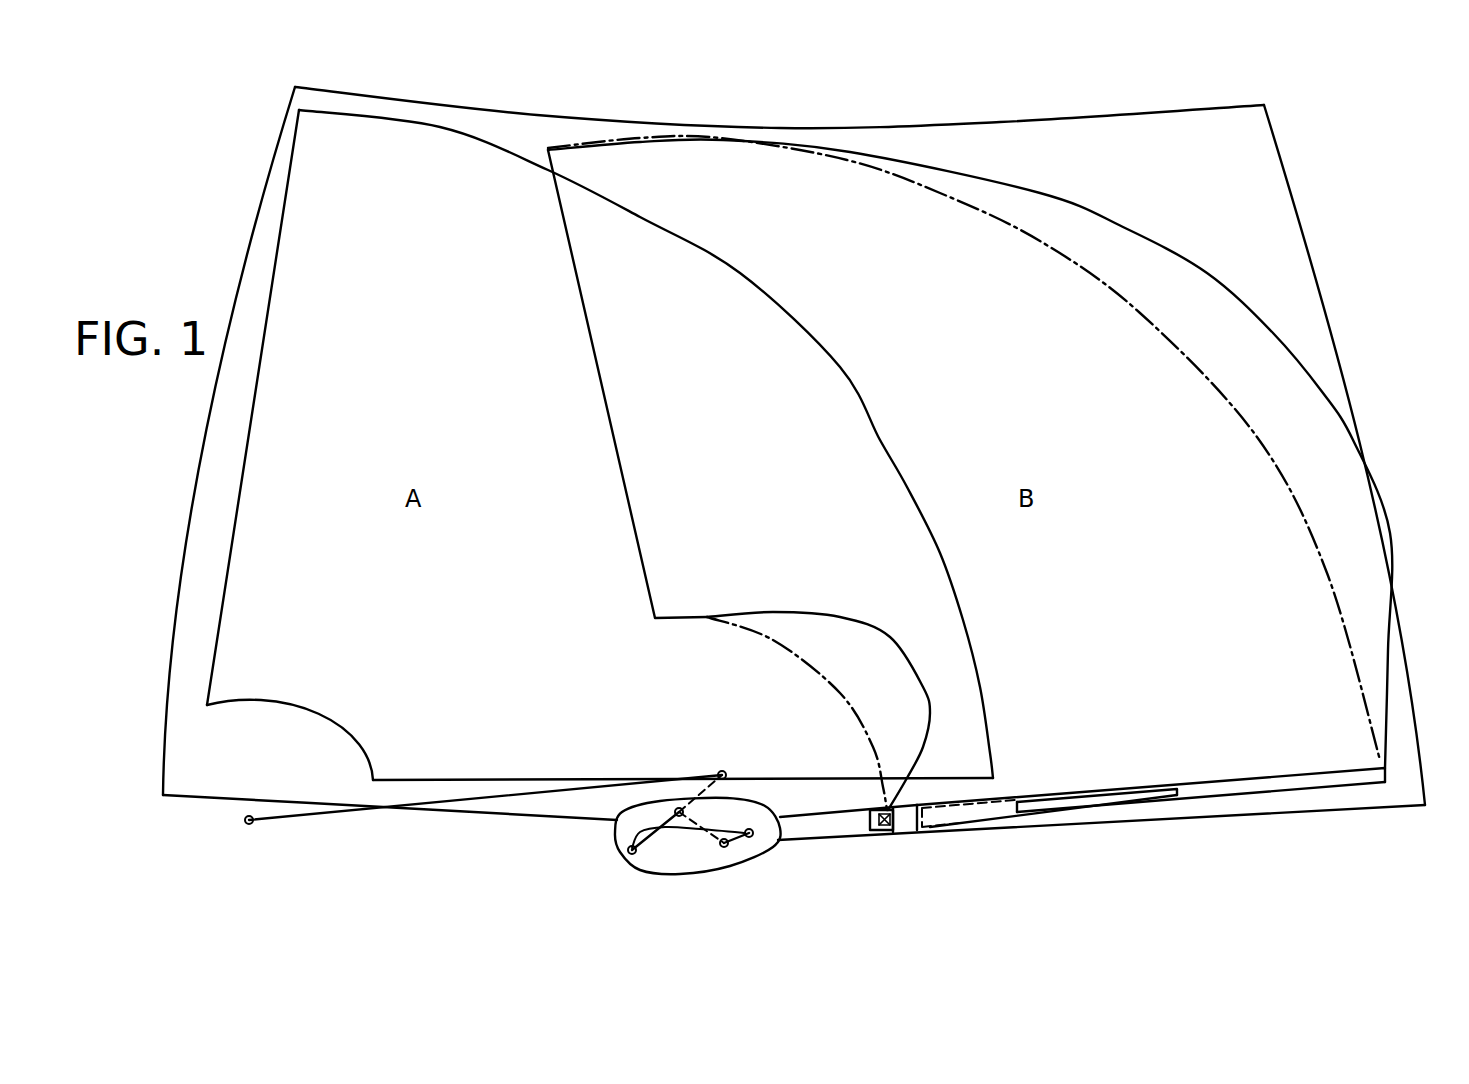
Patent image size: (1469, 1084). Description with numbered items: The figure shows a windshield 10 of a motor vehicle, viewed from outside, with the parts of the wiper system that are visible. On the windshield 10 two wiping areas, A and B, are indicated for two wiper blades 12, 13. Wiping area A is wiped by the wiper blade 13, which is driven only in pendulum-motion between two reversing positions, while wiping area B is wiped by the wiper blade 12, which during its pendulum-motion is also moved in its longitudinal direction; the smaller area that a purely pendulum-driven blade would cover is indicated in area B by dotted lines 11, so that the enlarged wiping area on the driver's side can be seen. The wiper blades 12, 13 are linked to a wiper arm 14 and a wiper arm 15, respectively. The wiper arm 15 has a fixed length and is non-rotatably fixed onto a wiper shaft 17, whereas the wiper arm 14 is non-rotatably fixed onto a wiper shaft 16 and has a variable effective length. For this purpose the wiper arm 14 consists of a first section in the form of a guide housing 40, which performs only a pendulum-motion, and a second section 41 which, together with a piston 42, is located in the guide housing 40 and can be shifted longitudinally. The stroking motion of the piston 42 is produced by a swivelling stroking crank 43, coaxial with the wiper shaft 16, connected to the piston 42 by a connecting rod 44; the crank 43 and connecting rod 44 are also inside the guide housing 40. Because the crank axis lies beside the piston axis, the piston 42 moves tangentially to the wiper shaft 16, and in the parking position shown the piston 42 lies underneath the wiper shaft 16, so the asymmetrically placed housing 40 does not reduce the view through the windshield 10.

The windshield 10 is at (1292, 258).
The phantom (dash-dot) position of sheet 11 is at (1297, 492).
The wiper blade 12 is at (1250, 789).
The wiper blade 13 is at (462, 780).
The wiper arm 14 is at (987, 840).
The wiper arm 15 is at (427, 805).
The wiper shaft 16 is at (679, 810).
The wiper shaft 17 is at (249, 824).
The guide housing 40 is at (758, 848).
The second section 41 is at (912, 830).
The piston 42 is at (888, 831).
The stroking crank 43 is at (618, 850).
The connecting rod 44 is at (688, 836).